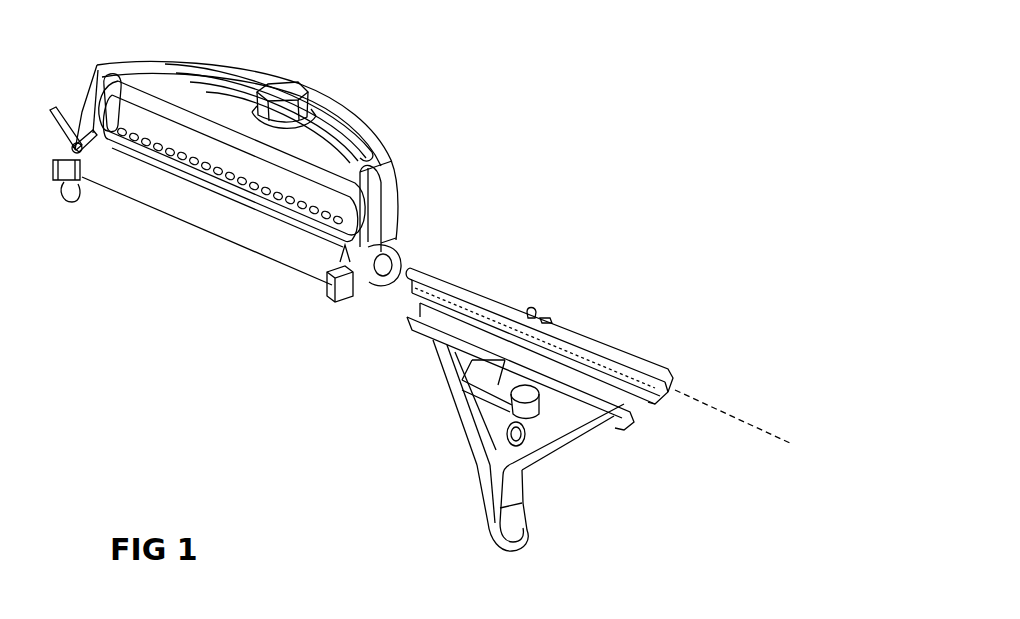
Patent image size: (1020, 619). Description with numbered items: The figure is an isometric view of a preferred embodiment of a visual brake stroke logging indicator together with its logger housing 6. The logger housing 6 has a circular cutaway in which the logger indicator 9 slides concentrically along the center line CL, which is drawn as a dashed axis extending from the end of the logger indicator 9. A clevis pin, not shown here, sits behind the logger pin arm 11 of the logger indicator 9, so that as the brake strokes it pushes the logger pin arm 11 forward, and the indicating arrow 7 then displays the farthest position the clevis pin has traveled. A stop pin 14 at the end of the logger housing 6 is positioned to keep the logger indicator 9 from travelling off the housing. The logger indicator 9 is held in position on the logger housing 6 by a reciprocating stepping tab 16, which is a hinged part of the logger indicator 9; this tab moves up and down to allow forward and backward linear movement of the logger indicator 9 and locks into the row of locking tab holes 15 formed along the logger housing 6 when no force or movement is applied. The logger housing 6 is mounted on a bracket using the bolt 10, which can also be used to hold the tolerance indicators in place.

The logger housing 6 is at (193, 223).
The indicating arrow 7 is at (547, 437).
The logger indicator 9 is at (475, 288).
The bolt 10 is at (297, 83).
The logger pin arm 11 is at (517, 500).
The stop pin 14 is at (75, 205).
The locking tab holes 15 is at (270, 192).
The reciprocating stepping tab 16 is at (556, 309).
The center line CL is at (773, 432).